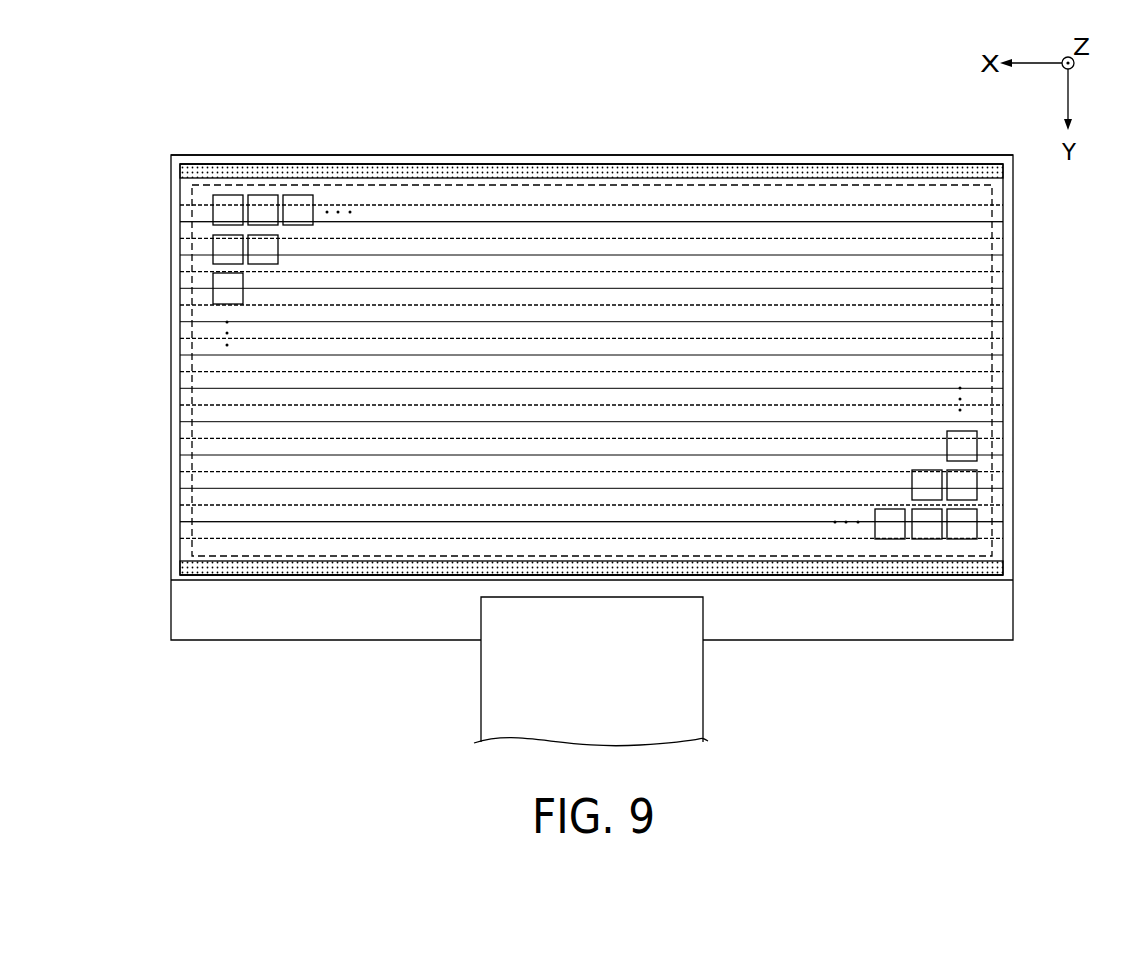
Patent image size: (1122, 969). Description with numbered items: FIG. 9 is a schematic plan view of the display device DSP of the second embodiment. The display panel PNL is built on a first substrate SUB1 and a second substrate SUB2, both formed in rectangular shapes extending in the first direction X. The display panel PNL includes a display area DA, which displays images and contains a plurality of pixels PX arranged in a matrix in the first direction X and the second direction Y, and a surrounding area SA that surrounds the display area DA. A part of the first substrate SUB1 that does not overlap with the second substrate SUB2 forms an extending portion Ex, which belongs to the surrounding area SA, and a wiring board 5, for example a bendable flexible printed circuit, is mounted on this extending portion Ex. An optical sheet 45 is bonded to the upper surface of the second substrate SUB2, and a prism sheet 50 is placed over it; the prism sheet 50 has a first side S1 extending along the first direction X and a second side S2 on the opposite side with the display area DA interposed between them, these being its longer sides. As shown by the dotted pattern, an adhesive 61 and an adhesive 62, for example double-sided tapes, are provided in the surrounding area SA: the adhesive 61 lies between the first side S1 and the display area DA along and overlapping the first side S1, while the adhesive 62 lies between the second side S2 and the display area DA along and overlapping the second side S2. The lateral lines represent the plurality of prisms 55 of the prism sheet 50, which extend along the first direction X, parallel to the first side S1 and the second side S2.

The display device DSP is at (176, 101).
The display panel PNL is at (266, 153).
The first substrate SUB1 is at (1008, 617).
The second substrate SUB2 is at (1015, 571).
The adhesive 61 is at (610, 166).
The adhesive 62 is at (765, 570).
The first side S1 is at (764, 152).
The second side S2 is at (827, 590).
The display area DA is at (992, 229).
The surrounding area SA is at (1014, 319).
The pixel PX is at (263, 266).
The prism 55 is at (215, 421).
The optical sheet 45 is at (207, 513).
The prism sheet 50 is at (207, 513).
The extending portion Ex is at (182, 608).
The wiring board 5 is at (703, 700).